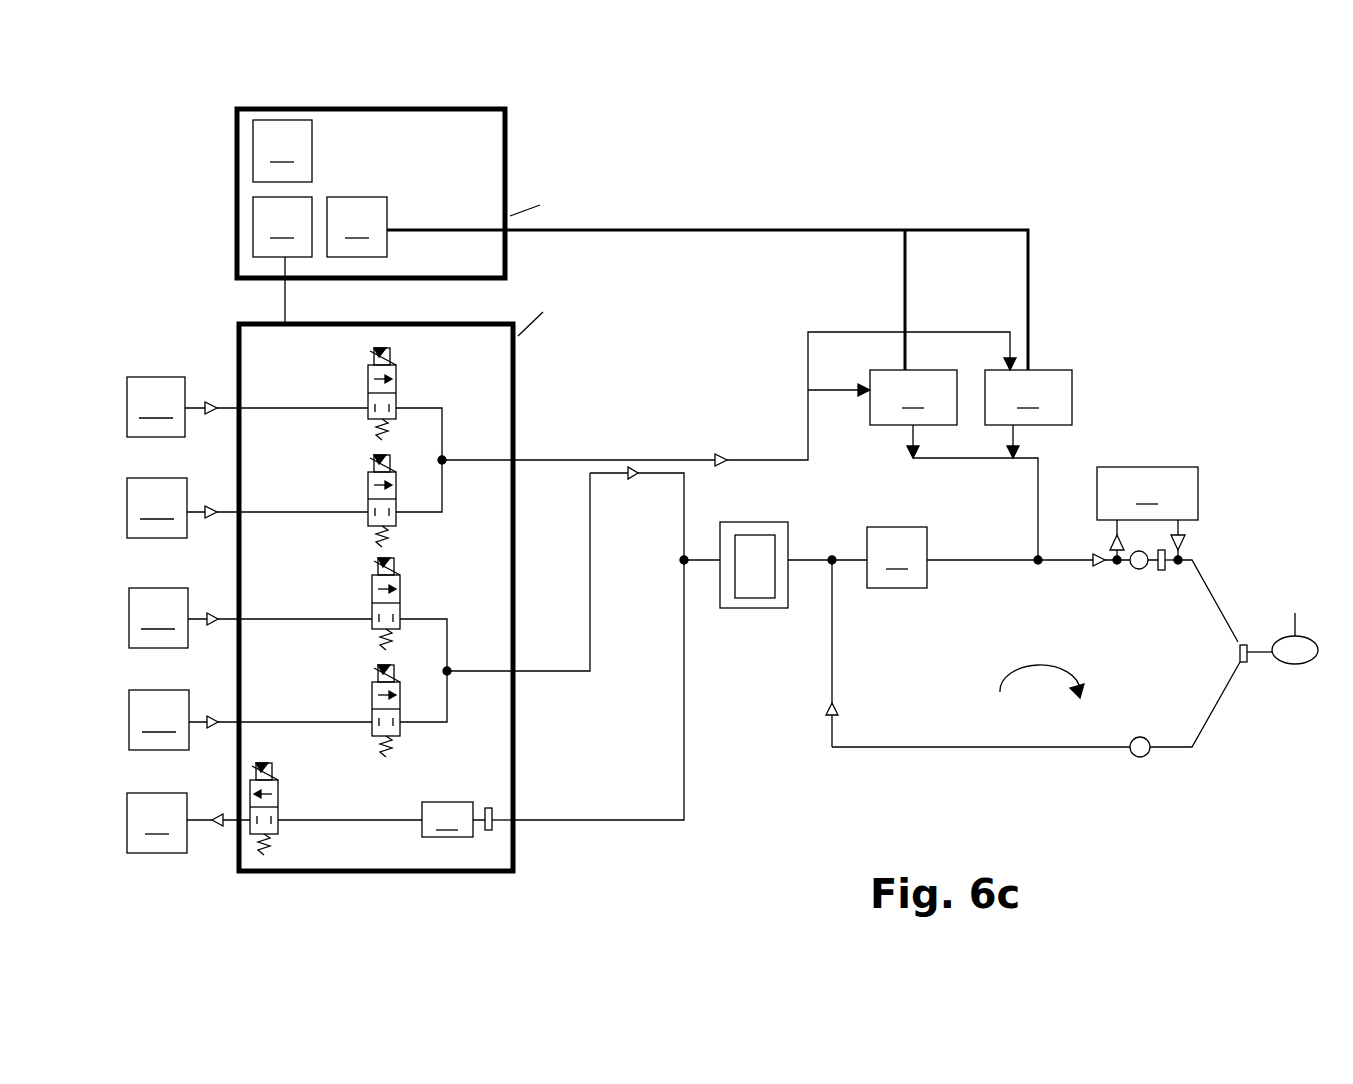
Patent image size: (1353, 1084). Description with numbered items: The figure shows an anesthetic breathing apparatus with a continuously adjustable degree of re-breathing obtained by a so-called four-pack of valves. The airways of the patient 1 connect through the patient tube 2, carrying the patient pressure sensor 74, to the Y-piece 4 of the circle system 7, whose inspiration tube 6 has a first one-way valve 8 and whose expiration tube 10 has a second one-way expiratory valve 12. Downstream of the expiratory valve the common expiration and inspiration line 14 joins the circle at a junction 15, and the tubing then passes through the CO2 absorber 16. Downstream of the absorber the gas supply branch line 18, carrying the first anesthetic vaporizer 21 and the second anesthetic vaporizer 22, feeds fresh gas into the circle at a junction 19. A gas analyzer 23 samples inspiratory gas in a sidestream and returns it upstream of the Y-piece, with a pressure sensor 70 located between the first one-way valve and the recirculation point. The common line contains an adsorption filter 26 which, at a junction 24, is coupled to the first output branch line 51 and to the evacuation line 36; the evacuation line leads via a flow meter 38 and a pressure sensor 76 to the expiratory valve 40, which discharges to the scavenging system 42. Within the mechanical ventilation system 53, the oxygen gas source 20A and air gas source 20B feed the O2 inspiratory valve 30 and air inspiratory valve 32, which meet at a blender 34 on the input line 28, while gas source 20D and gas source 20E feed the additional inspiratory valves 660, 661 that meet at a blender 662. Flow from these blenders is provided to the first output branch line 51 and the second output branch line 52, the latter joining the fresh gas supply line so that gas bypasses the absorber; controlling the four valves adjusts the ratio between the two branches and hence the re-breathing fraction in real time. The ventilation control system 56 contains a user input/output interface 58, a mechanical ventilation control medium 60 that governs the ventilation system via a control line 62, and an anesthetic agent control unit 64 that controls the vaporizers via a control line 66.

The patient 1 is at (1318, 672).
The patient tube 2 is at (1249, 660).
The Y-piece 4 is at (1240, 641).
The inspiration tube 6 is at (1208, 587).
The circle system 7 is at (998, 766).
The first one-way valve 8 is at (1143, 569).
The expiration tube 10 is at (1213, 700).
The second one-way expiratory valve 12 is at (1136, 758).
The common expiration and inspiration line 14 is at (812, 568).
The junction 15 is at (838, 568).
The CO2 absorber 16 is at (908, 588).
The gas supply branch line 18 is at (648, 458).
The junction 19 is at (1036, 565).
The oxygen gas source 20A is at (152, 385).
The air gas source 20B is at (143, 488).
The gas source 20D is at (155, 593).
The gas source 20E is at (138, 705).
The first anesthetic vaporizer 21 is at (940, 372).
The second anesthetic vaporizer 22 is at (1065, 383).
The gas analyzer 23 is at (1176, 480).
The junction 24 is at (686, 566).
The adsorption filter 26 is at (752, 612).
The input line 28 is at (550, 463).
The O2 inspiratory valve 30 is at (370, 404).
The air inspiratory valve 32 is at (370, 507).
The blender 34 is at (443, 458).
The evacuation line 36 is at (603, 823).
The flow meter 38 is at (433, 806).
The expiratory valve 40 is at (283, 803).
The scavenging system 42 is at (168, 845).
The first output branch line 51 is at (598, 476).
The second output branch line 52 is at (598, 458).
The mechanical ventilation system 53 is at (519, 392).
The ventilation control system 56 is at (510, 185).
The user input/output interface 58 is at (256, 147).
The mechanical ventilation control medium 60 is at (253, 218).
The control line 62 is at (283, 300).
The anesthetic agent control unit 64 is at (373, 208).
The control line 66 is at (783, 230).
The pressure sensor 70 is at (1164, 572).
The patient pressure sensor 74 is at (1242, 664).
The pressure sensor 76 is at (475, 845).
The inspiratory valve 660 is at (374, 608).
The inspiratory valve 661 is at (374, 708).
The blender 662 is at (448, 668).